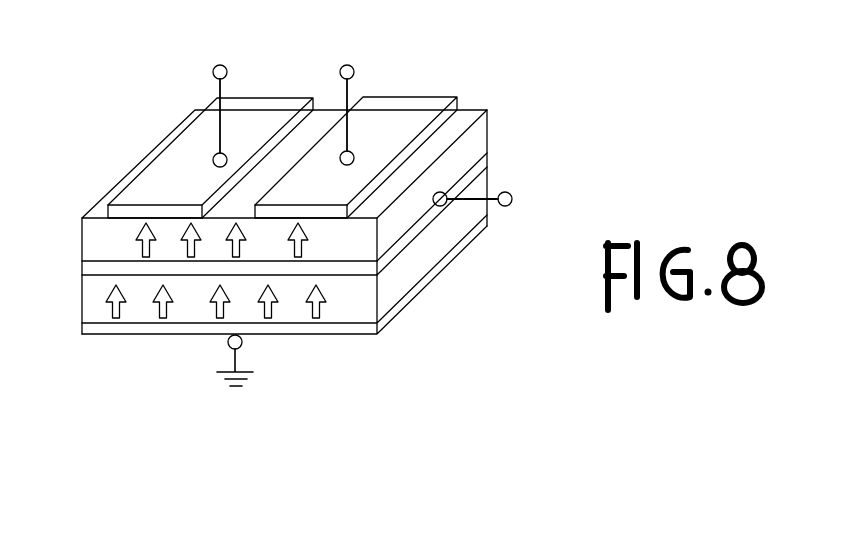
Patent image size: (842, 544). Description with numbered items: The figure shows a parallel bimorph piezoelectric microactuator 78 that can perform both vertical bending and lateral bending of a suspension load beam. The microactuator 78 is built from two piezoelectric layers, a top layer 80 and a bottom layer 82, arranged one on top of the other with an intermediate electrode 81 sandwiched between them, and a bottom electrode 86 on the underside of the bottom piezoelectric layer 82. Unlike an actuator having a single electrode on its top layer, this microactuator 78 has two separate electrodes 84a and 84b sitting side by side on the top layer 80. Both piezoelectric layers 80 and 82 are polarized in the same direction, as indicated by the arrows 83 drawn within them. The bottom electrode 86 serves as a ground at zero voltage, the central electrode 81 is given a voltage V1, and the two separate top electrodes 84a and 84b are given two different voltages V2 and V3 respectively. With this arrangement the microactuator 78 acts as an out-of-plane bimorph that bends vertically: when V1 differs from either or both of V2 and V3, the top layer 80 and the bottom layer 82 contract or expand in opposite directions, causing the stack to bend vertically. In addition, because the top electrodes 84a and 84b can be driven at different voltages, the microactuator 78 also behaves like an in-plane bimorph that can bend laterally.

The parallel bimorph microactuator 78 is at (580, 113).
The top piezoelectric layer 80 is at (483, 132).
The intermediate electrode 81 is at (478, 162).
The bottom piezoelectric layer 82 is at (450, 228).
The arrows 83 is at (138, 230).
The top electrode 84a is at (246, 143).
The top electrode 84b is at (370, 140).
The bottom electrode 86 is at (224, 342).
The voltage V1 is at (513, 194).
The voltage V2 is at (212, 72).
The voltage V3 is at (347, 65).